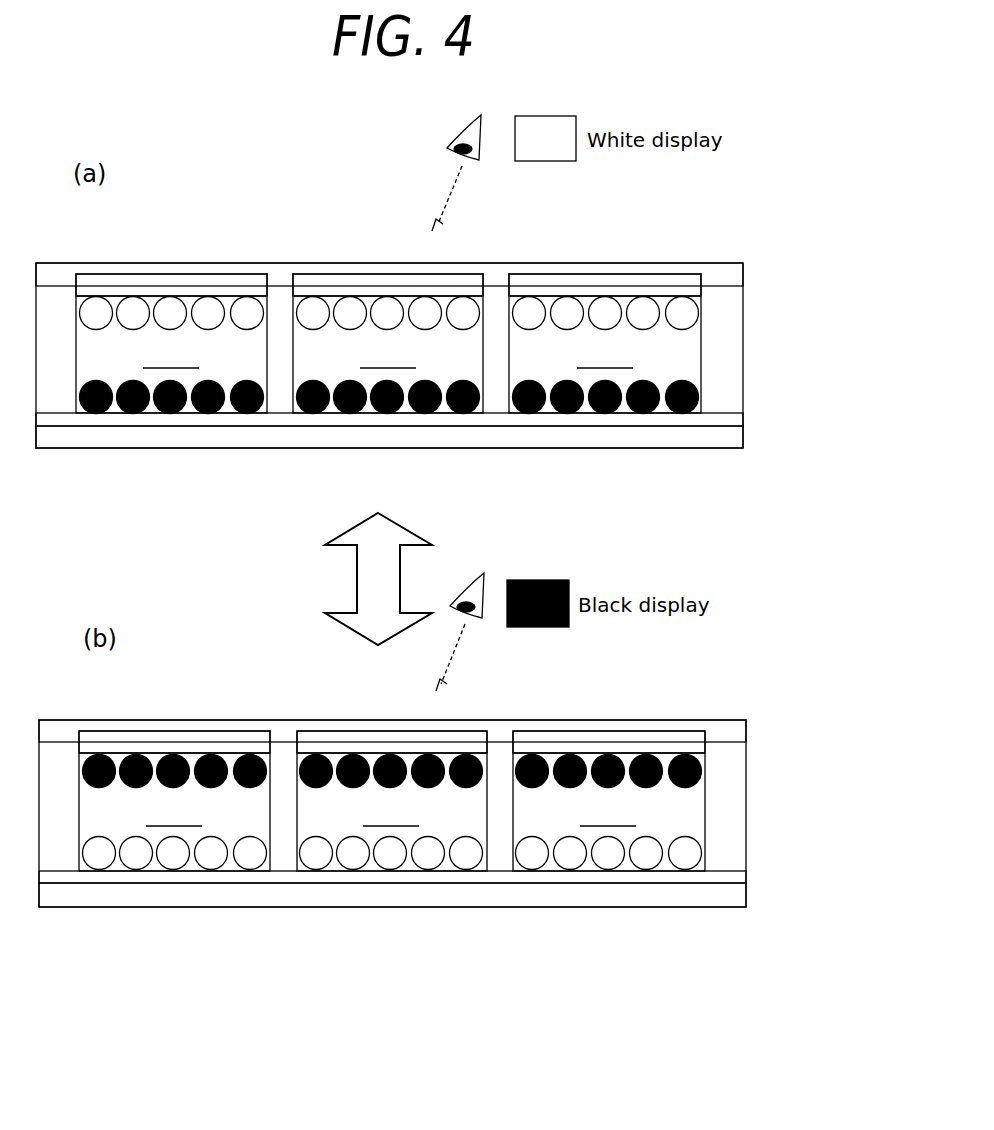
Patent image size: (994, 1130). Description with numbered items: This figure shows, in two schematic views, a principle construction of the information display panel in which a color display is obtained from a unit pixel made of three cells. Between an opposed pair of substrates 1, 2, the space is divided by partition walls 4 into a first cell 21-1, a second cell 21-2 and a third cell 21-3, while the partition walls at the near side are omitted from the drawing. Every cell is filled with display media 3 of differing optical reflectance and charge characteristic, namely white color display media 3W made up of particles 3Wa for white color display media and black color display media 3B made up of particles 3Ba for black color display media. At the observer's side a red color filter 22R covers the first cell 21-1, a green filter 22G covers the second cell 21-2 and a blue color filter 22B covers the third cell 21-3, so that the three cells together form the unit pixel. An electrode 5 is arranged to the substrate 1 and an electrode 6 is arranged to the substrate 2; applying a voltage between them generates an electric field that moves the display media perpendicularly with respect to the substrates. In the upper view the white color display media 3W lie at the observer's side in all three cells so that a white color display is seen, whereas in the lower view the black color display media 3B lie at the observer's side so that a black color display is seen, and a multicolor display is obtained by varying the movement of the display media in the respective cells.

The substrate 1 is at (250, 437).
The substrate 2 is at (495, 268).
The display media 3 is at (457, 587).
The white color display media 3W is at (442, 587).
The black color display media 3B is at (439, 582).
The particles for white color display media 3Wa is at (650, 302).
The particles for black color display media 3Ba is at (650, 410).
The partition wall 4 is at (56, 400).
The electrode 5 is at (443, 420).
The electrode 6 is at (225, 294).
The first cell 21-1 is at (173, 572).
The second cell 21-2 is at (390, 572).
The third cell 21-3 is at (607, 572).
The red color filter 22R is at (165, 277).
The green filter 22G is at (368, 277).
The blue color filter 22B is at (601, 278).